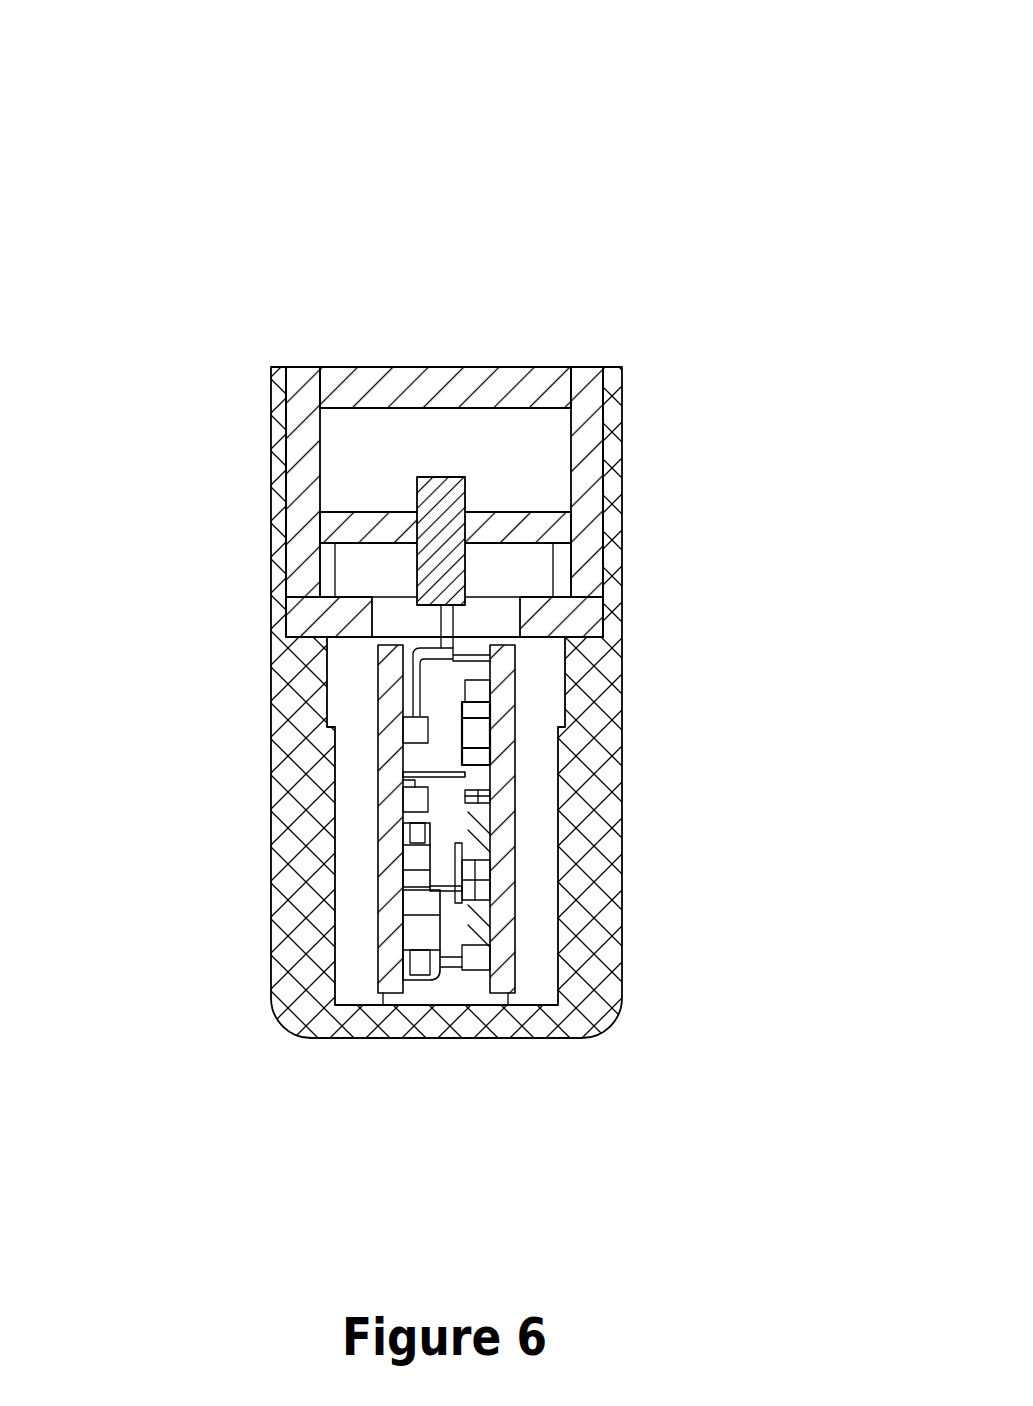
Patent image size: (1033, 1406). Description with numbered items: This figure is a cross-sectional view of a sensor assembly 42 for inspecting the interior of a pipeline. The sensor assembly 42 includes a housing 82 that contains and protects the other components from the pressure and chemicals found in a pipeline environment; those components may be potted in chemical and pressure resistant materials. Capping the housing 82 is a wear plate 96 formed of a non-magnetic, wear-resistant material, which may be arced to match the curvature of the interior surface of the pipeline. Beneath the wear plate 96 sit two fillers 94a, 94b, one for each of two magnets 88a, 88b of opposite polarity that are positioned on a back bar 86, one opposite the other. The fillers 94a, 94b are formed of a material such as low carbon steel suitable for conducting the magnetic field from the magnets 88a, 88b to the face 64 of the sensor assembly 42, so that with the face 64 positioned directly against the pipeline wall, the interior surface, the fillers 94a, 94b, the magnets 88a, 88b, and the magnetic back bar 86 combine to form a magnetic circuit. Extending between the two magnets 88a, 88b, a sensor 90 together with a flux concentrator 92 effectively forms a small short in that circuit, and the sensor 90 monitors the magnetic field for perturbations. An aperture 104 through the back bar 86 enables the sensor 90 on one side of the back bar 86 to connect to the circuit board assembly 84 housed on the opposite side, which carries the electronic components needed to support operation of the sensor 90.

The sensor assembly 42 is at (627, 112).
The face 64 is at (390, 366).
The housing 82 is at (590, 830).
The circuit board assembly 84 is at (377, 800).
The back bar 86 is at (328, 620).
The magnet 88a is at (307, 560).
The magnet 88b is at (585, 565).
The sensor 90 is at (435, 503).
The flux concentrator 92 is at (510, 527).
The filler 94a is at (300, 385).
The filler 94b is at (582, 385).
The wear plate 96 is at (453, 393).
The aperture 104 is at (527, 617).